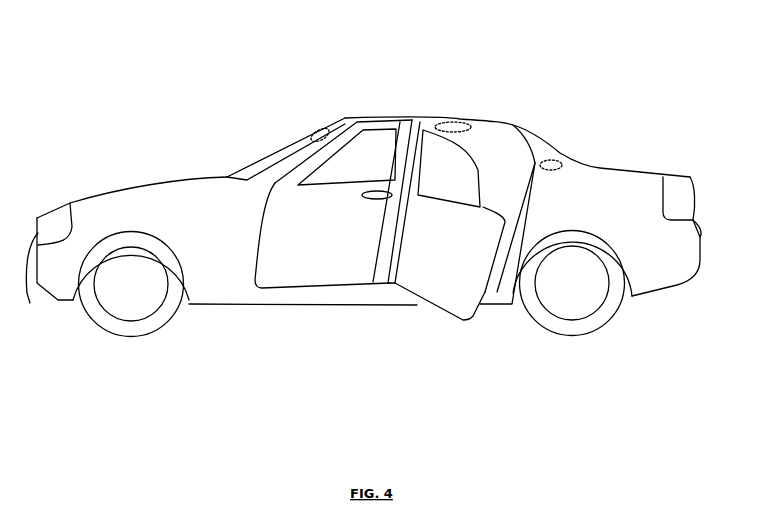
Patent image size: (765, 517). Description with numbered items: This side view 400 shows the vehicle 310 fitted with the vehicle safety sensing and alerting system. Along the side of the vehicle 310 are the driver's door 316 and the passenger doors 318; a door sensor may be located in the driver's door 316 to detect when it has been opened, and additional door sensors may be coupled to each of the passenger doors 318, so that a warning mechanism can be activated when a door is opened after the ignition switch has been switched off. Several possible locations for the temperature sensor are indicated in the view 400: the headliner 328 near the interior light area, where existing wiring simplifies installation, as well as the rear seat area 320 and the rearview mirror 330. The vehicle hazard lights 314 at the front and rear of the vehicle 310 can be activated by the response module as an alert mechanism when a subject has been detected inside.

The vehicle 400 is at (371, 198).
The vehicle 310 is at (92, 194).
The vehicle hazard lights 314 is at (703, 180).
The driver's door 316 is at (302, 273).
The passenger doors 318 is at (435, 278).
The rear seat area 320 is at (553, 159).
The headliner 328 is at (456, 119).
The rearview mirror 330 is at (315, 129).